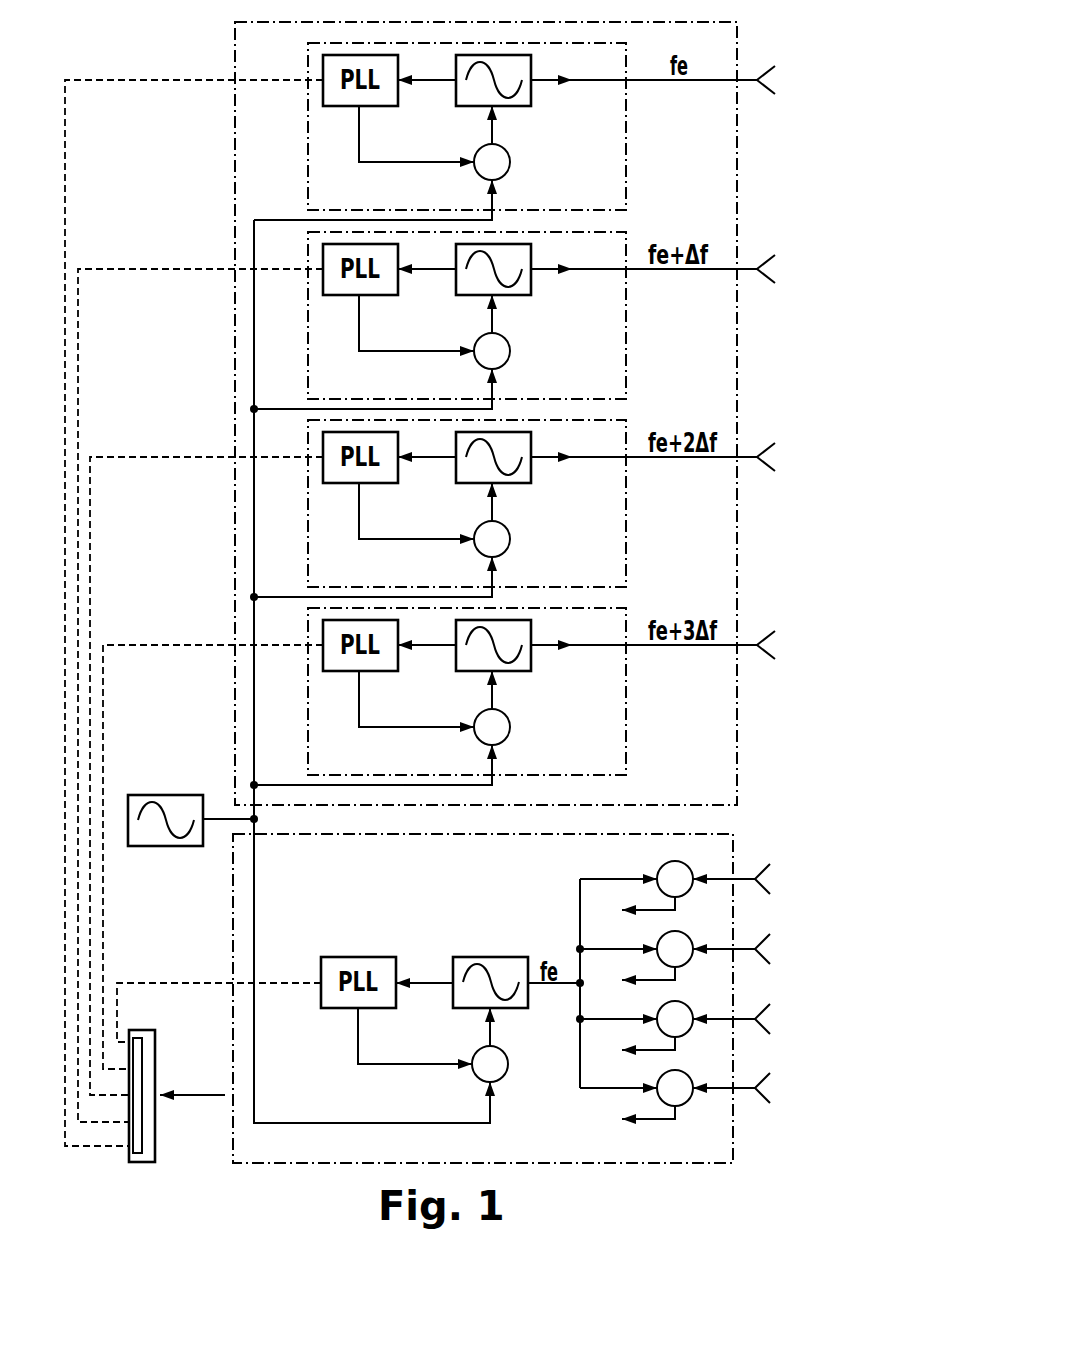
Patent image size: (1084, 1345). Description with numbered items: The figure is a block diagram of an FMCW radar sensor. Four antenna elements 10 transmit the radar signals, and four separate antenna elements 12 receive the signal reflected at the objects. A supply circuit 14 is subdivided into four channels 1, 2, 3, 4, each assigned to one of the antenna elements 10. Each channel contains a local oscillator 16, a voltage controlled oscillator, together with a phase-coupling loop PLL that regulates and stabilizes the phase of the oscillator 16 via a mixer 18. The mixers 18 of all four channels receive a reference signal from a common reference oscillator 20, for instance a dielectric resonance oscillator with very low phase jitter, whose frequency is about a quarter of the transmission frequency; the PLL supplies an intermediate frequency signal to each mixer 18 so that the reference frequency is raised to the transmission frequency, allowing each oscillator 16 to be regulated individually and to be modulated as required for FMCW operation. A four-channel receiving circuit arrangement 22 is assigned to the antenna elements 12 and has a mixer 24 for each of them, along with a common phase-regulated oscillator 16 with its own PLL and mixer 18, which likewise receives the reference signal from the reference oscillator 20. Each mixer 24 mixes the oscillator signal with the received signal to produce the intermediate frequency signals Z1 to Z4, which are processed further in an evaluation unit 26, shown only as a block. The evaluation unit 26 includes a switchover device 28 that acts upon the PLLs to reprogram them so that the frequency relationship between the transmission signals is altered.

The channel 1 is at (308, 168).
The channel 2 is at (308, 357).
The channel 3 is at (308, 545).
The channel 4 is at (308, 733).
The antenna element 10 is at (760, 85).
The antenna element 12 is at (758, 884).
The supply circuit 14 is at (235, 147).
The local oscillator 16 is at (531, 103).
The mixer 18 is at (510, 162).
The reference oscillator 20 is at (167, 795).
The receiving circuit arrangement 22 is at (233, 930).
The mixer 24 is at (679, 861).
The evaluation unit 26 is at (155, 1050).
The switchover device 28 is at (142, 1125).